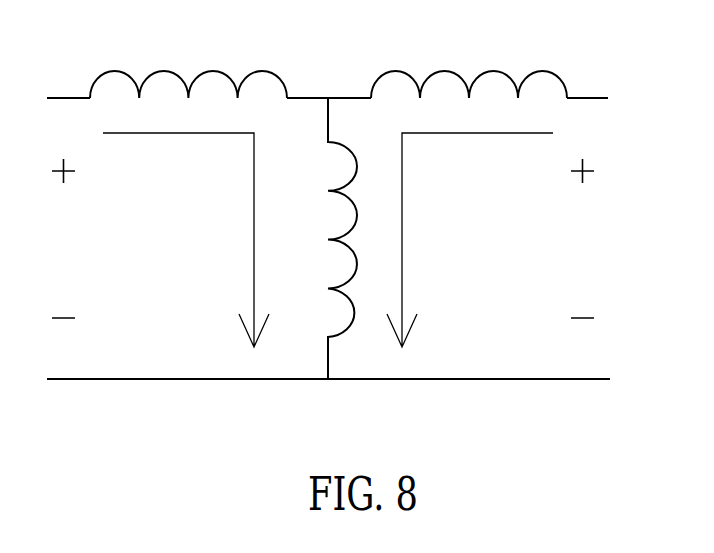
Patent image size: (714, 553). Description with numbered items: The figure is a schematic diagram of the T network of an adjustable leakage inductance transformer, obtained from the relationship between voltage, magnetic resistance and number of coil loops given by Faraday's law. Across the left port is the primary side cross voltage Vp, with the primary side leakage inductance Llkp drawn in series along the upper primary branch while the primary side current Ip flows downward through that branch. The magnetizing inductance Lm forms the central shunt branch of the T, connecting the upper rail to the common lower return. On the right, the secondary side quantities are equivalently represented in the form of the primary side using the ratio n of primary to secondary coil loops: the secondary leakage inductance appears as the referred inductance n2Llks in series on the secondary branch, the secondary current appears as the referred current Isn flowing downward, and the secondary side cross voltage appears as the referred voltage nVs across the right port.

The primary side leakage inductance Llkp is at (188, 56).
The secondary side leakage inductance referred to the primary side n2Llks is at (469, 55).
The magnetizing inductance Lm is at (321, 238).
The primary side current Ip is at (186, 240).
The secondary side current referred to the primary side Isn is at (470, 240).
The primary side cross voltage Vp is at (62, 238).
The secondary side cross voltage referred to the primary side nVs is at (584, 238).